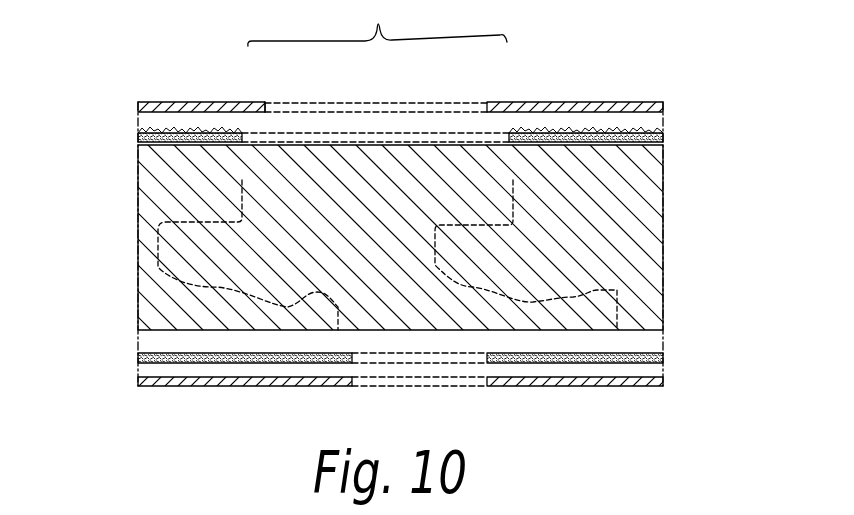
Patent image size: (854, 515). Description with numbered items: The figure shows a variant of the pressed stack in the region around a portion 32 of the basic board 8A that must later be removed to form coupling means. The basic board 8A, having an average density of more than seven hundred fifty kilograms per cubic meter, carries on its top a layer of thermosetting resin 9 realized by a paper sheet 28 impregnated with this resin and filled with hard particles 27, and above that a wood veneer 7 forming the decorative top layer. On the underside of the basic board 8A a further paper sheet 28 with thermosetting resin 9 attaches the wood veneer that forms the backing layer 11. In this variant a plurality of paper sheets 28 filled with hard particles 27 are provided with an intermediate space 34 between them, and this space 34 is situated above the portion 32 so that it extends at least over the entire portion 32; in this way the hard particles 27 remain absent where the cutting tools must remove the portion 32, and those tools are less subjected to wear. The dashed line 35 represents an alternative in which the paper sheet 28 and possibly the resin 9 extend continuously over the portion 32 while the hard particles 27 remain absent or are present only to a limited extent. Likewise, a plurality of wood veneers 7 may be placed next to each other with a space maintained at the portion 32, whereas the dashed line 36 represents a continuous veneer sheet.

The wood veneer 7 is at (193, 102).
The basic board 8A is at (157, 217).
The layer of thermosetting resin 9 is at (593, 138).
The backing layer 11 is at (158, 380).
The hard particles 27 is at (173, 127).
The paper sheet 28 is at (138, 142).
The portion 32 is at (385, 107).
The intermediate space 34 is at (377, 24).
The dashed line 35 is at (360, 245).
The dashed line 36 is at (277, 102).